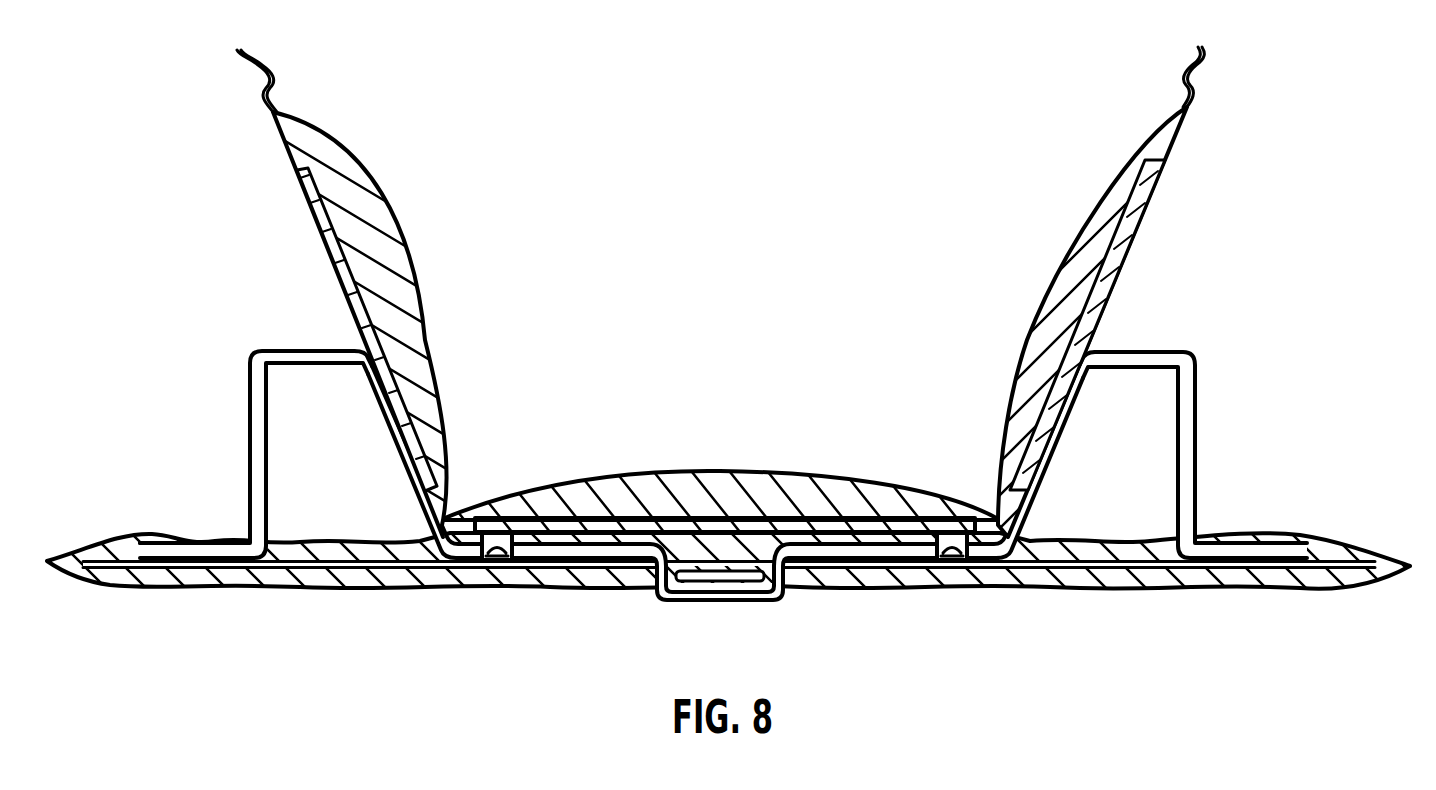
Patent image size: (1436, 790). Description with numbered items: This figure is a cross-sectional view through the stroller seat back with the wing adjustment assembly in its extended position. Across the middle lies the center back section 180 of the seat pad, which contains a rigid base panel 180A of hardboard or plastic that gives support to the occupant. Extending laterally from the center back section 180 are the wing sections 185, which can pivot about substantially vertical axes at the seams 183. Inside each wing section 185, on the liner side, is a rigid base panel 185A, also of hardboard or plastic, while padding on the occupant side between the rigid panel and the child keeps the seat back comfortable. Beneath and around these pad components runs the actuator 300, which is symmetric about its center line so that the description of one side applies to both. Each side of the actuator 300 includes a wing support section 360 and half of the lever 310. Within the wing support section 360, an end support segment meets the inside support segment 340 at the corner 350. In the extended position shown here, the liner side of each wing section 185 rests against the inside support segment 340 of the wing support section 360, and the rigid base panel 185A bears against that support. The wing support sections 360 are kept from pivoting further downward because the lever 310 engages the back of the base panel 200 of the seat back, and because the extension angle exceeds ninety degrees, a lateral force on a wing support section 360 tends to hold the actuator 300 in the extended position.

The center back section 180 is at (717, 478).
The rigid base panel 180A is at (572, 520).
The seams 183 is at (443, 520).
The wing sections 185 is at (383, 290).
The rigid base panel 185A is at (323, 233).
The substrate 200 is at (1326, 547).
The actuator 300 is at (188, 544).
The lever 310 is at (718, 588).
The inside support segment 340 is at (398, 466).
The corner 350 is at (355, 367).
The wing support section 360 is at (293, 343).